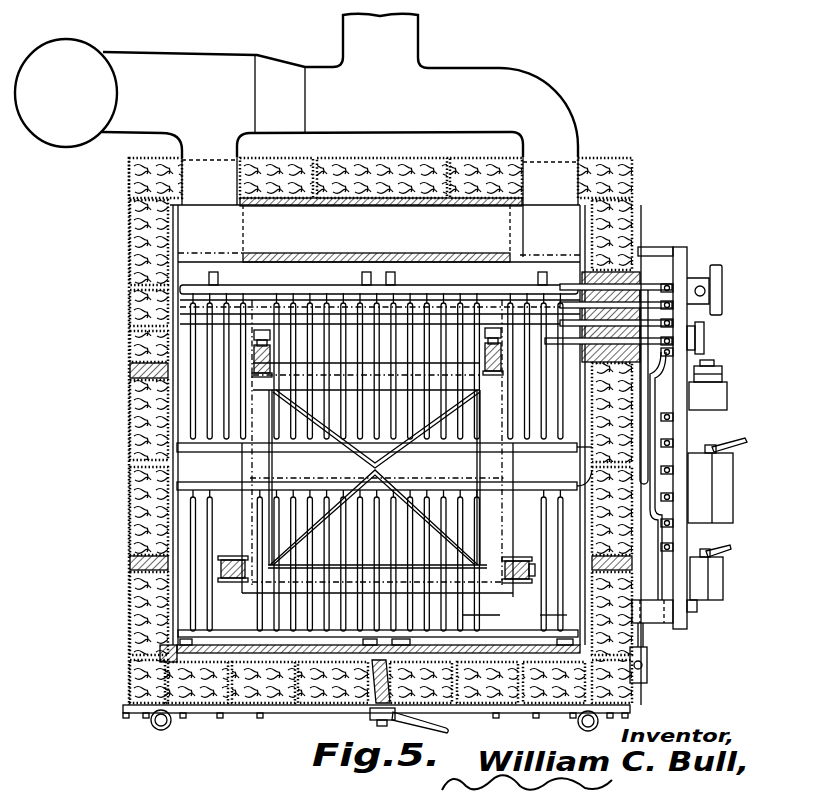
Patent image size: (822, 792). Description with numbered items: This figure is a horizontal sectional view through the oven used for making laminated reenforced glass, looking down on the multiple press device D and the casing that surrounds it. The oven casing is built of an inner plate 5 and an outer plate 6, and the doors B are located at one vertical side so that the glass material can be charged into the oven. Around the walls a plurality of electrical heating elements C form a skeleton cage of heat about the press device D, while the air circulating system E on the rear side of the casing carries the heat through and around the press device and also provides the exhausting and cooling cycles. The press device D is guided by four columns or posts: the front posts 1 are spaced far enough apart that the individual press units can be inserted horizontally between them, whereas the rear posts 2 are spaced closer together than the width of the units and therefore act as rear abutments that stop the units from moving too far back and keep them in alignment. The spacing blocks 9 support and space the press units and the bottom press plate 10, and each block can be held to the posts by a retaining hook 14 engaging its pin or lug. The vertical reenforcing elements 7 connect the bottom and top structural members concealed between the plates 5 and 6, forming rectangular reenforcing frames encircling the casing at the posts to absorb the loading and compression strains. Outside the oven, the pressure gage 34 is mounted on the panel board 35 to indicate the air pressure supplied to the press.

The front posts 1 is at (234, 584).
The rear posts 2 is at (260, 341).
The inner plate 5 is at (128, 301).
The outer plate 6 is at (163, 328).
The vertical reenforcing elements 7 is at (147, 376).
The spacing blocks 9 is at (266, 376).
The bottom press plate 10 is at (247, 521).
The retaining hook 14 is at (252, 356).
The pressure gage 34 is at (707, 337).
The panel board 35 is at (689, 437).
The doors B is at (311, 709).
The electrical heating elements C is at (457, 303).
The multiple press device D is at (377, 471).
The air circulating system E is at (296, 135).